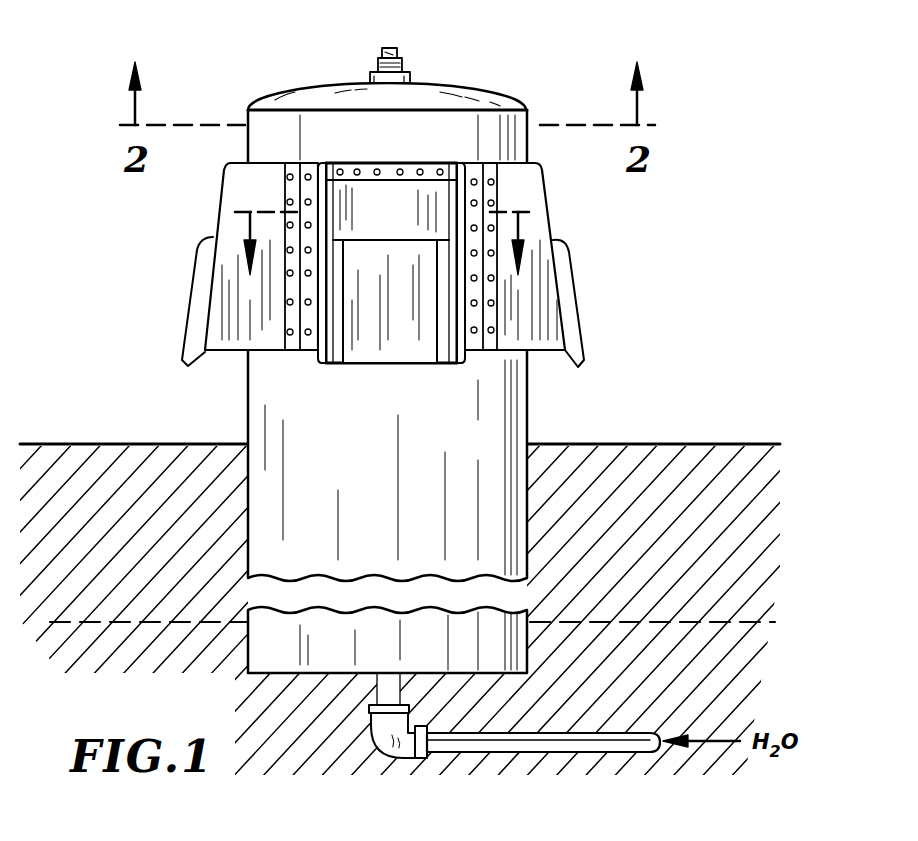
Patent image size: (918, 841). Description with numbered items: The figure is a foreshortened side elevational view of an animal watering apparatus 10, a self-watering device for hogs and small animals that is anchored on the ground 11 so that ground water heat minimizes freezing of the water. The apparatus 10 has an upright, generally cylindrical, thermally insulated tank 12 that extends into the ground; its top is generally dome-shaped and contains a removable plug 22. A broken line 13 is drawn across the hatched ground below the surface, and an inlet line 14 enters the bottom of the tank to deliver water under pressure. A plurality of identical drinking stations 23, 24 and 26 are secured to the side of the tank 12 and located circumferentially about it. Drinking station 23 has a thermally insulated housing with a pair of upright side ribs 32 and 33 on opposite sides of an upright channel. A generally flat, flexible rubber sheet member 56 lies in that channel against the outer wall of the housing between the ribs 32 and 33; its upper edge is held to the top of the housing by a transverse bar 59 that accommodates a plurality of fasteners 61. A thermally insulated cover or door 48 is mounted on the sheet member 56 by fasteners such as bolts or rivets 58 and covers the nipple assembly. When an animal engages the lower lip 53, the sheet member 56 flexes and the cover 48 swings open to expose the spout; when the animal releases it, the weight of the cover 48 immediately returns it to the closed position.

The animal watering apparatus 10 is at (528, 80).
The ground 11 is at (677, 444).
The tank 12 is at (305, 87).
The frost line 13 is at (773, 620).
The inlet line 14 is at (628, 755).
The removable plug 22 is at (400, 55).
The drinking station 23 is at (392, 382).
The drinking station 24 is at (178, 259).
The drinking station 26 is at (592, 253).
The upright side rib 32 is at (325, 170).
The upright side rib 33 is at (461, 170).
The cover 48 is at (418, 345).
The lower lip 53 is at (364, 365).
The sheet member 56 is at (402, 226).
The rivets 58 is at (326, 355).
The transverse bar 59 is at (392, 170).
The fasteners 61 is at (376, 168).